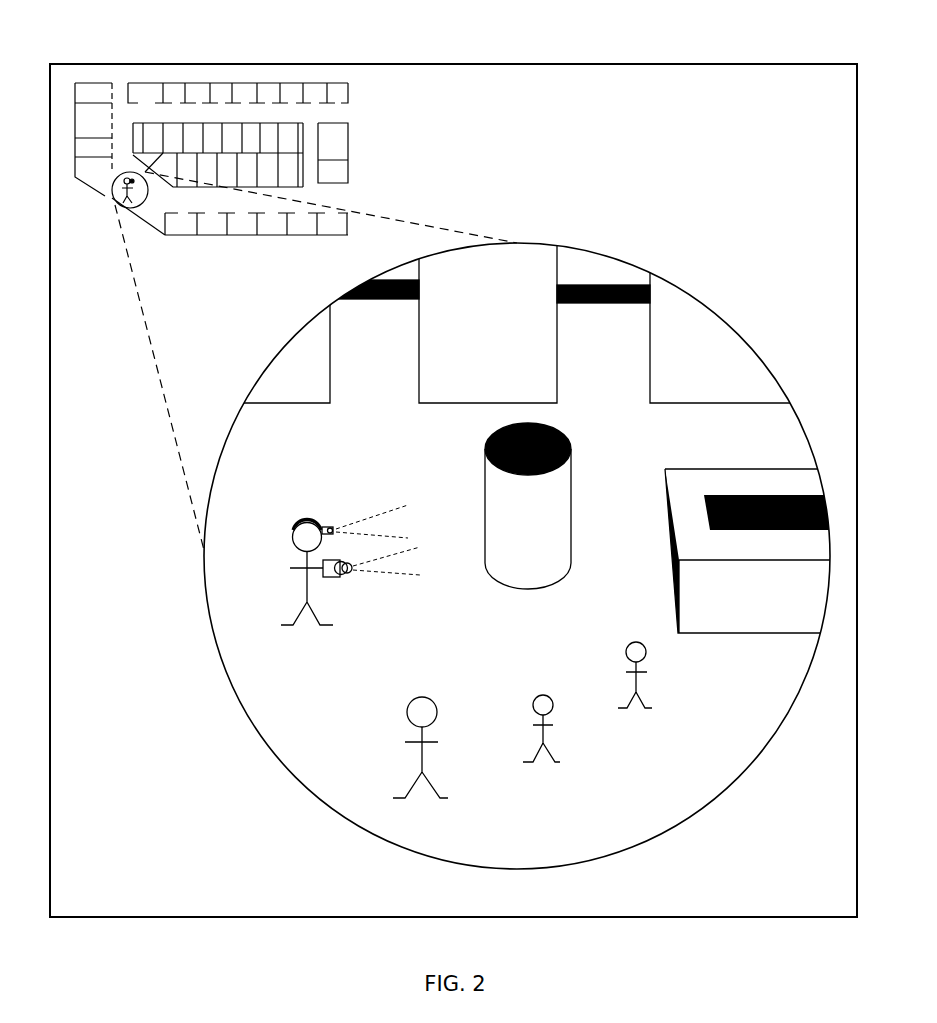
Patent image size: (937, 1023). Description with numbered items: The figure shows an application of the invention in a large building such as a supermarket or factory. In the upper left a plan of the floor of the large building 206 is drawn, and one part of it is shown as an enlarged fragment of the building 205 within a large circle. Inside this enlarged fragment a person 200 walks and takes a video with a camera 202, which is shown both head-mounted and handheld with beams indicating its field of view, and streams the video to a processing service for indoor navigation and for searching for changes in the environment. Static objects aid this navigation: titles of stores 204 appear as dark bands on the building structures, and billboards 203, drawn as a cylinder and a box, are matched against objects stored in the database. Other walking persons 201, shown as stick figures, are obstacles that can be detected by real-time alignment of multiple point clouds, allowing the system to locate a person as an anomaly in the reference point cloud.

The person 200 is at (305, 555).
The other walking persons 201 is at (419, 733).
The camera 202 is at (333, 529).
The billboards 203 is at (485, 470).
The titles of stores 204 is at (635, 282).
The enlarged fragment of the building 205 is at (520, 534).
The plan of the floor of a large building 206 is at (340, 168).